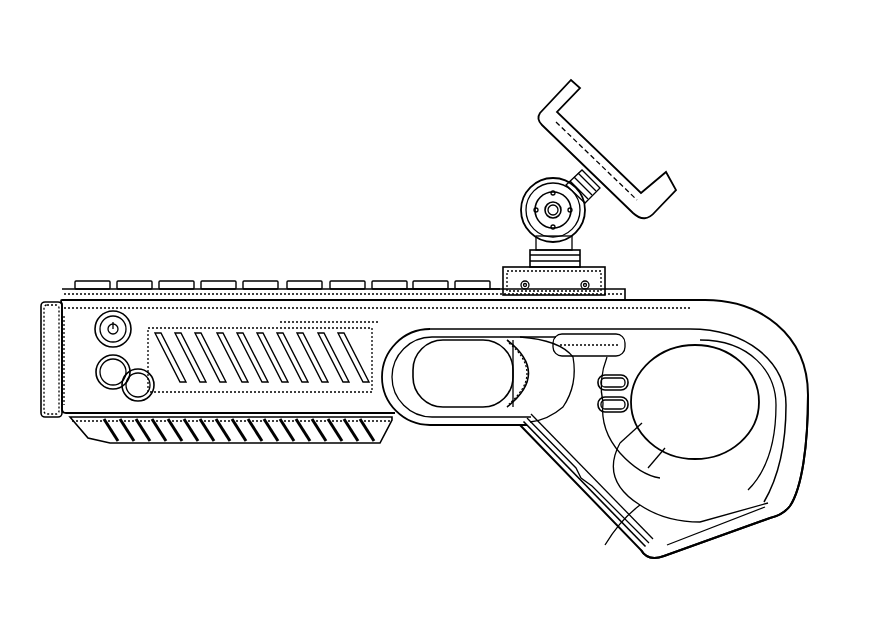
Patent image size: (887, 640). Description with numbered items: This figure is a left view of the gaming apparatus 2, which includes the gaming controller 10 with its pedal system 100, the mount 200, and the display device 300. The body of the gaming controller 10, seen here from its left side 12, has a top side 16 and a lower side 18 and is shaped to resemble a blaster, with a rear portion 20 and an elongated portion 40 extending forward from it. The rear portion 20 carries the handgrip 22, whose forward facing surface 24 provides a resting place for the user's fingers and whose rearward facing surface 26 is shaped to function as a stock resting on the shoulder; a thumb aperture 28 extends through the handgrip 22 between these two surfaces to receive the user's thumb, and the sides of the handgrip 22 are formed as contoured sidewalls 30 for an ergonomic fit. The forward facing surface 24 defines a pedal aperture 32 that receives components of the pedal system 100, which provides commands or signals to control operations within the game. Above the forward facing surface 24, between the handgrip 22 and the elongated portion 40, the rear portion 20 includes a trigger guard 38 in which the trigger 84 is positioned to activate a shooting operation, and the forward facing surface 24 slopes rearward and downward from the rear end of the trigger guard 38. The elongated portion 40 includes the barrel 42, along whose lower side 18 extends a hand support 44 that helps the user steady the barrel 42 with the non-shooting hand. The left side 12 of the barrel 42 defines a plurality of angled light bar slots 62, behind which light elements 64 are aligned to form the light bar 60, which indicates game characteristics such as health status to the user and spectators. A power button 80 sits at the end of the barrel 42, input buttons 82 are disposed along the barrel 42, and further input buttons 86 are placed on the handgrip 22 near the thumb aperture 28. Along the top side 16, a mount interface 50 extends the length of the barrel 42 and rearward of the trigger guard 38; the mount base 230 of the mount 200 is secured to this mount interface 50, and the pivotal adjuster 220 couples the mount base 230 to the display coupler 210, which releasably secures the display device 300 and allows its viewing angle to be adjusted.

The gaming apparatus 2 is at (122, 135).
The gaming controller 10 is at (238, 175).
The left side 12 is at (72, 398).
The top side 16 is at (158, 248).
The lower side 18 is at (122, 460).
The rear portion 20 is at (710, 270).
The handgrip 22 is at (698, 520).
The forward facing surface 24 is at (625, 548).
The rearward facing surface 26 is at (814, 395).
The thumb aperture 28 is at (716, 448).
The contoured sidewalls 30 is at (635, 500).
The pedal aperture 32 is at (646, 550).
The trigger guard 38 is at (468, 400).
The elongated portion 40 is at (333, 250).
The barrel 42 is at (72, 323).
The hand support 44 is at (228, 440).
The mount interface 50 is at (433, 272).
The light bar 60 is at (235, 326).
The light bar slots 62 is at (223, 384).
The light elements 64 is at (335, 396).
The power button 80 is at (112, 318).
The input buttons 82 is at (113, 390).
The trigger 84 is at (522, 400).
The input buttons 86 is at (618, 380).
The pedal system 100 is at (572, 508).
The mount 200 is at (518, 108).
The display coupler 210 is at (567, 83).
The pivotal adjuster 220 is at (547, 182).
The mount base 230 is at (510, 268).
The display device 300 is at (612, 158).